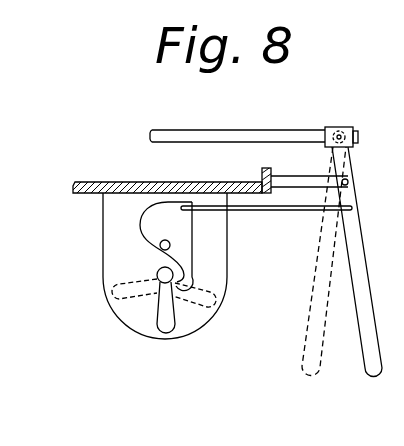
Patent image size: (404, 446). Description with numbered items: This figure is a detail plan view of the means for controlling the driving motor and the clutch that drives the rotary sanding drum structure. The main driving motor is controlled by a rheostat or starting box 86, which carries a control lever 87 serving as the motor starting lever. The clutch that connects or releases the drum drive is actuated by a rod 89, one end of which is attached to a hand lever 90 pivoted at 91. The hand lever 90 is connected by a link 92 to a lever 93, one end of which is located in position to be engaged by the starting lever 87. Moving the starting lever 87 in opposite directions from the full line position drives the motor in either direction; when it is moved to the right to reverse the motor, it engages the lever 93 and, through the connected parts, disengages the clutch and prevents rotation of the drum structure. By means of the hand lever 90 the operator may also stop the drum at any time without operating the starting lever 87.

The starting box 86 is at (106, 243).
The control lever 87 is at (160, 313).
The rod 89 is at (273, 136).
The hand lever 90 is at (366, 349).
The pivot 91 is at (350, 181).
The link 92 is at (286, 211).
The lever 93 is at (186, 229).